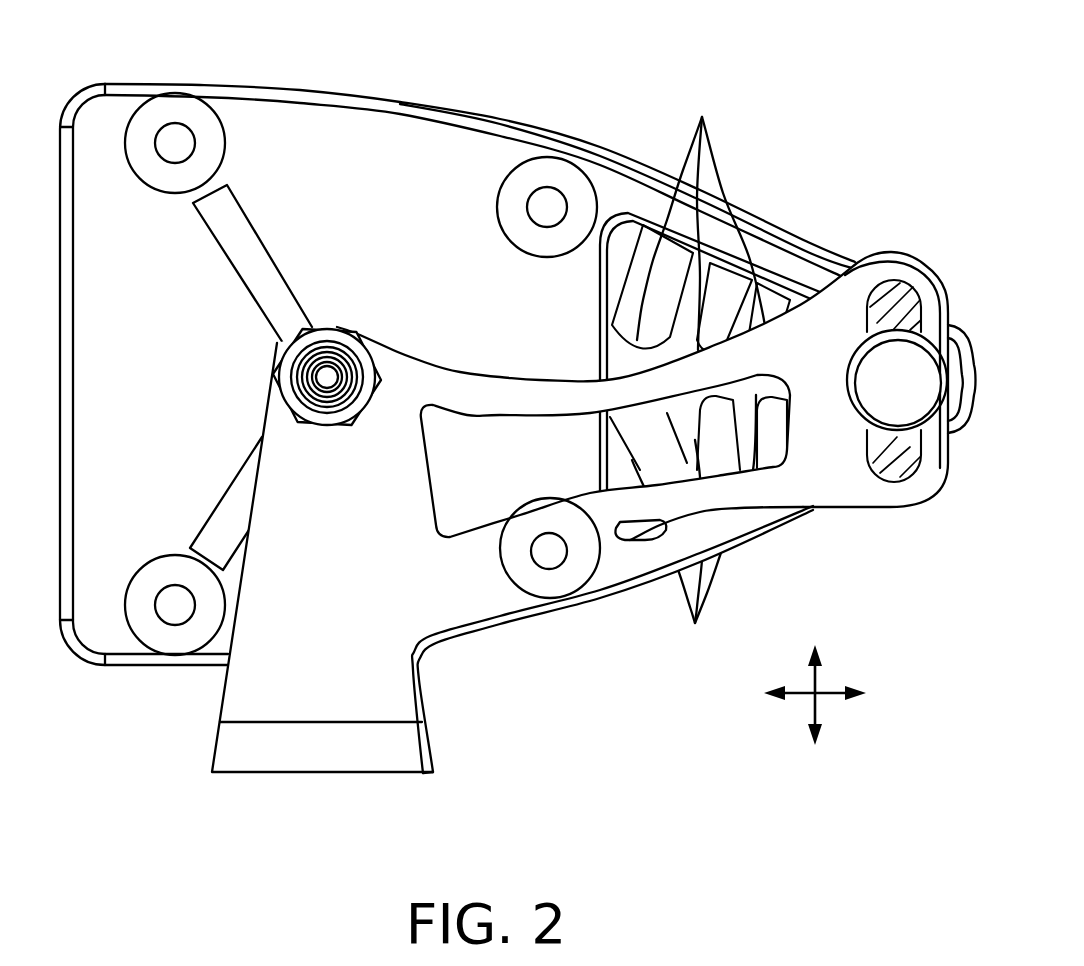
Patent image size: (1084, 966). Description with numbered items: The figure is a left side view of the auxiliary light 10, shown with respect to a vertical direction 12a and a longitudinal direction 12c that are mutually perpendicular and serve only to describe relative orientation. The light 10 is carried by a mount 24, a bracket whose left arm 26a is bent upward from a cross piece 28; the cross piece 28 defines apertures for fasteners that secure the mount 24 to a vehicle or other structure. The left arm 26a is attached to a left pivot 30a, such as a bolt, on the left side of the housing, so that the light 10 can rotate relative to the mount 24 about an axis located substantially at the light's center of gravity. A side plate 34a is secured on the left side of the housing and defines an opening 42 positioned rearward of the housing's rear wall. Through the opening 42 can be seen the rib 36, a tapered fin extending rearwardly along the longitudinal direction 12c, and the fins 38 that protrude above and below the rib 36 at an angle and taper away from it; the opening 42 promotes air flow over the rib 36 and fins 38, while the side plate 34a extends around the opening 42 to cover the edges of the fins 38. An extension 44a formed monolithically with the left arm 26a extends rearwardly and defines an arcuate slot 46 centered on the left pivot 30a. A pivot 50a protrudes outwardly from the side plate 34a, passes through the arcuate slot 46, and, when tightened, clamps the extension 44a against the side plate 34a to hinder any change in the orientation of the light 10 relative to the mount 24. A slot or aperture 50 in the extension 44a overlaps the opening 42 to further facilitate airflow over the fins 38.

The auxiliary light 10 is at (876, 110).
The vertical direction 12a is at (812, 710).
The longitudinal direction 12c is at (792, 692).
The mount 24 is at (440, 706).
The left arm 26a is at (325, 635).
The cross piece 28 is at (220, 765).
The left pivot 30a is at (327, 375).
The side plate 34a is at (252, 135).
The rib 36 is at (658, 352).
The fins 38 is at (700, 370).
The opening 42 is at (608, 237).
The extension 44a is at (580, 512).
The arcuate slot 46 is at (917, 307).
The slot or aperture 50 is at (545, 420).
The pivot 50a is at (897, 437).